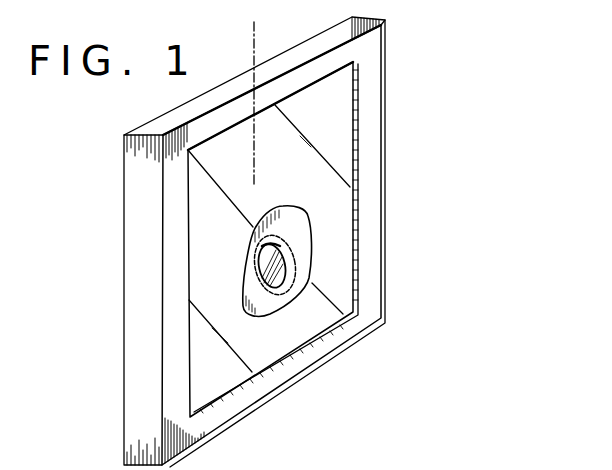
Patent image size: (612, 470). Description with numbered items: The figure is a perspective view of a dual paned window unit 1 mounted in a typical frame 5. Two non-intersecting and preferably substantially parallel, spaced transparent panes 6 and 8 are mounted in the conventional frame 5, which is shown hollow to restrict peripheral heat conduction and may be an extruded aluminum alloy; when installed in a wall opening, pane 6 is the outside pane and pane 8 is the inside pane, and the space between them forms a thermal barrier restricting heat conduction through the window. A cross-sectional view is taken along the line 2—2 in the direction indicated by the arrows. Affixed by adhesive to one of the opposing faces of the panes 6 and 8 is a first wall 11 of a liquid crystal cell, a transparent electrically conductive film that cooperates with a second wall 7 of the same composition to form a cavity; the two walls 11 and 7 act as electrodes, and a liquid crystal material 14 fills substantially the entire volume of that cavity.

The window unit 1 is at (401, 69).
The section line 2— 2 is at (254, 22).
The frame 5 is at (378, 141).
The transparent pane 6 is at (340, 163).
The second wall 7 is at (298, 248).
The transparent pane 8 is at (263, 258).
The first wall 11 is at (294, 258).
The liquid crystal material 14 is at (300, 219).